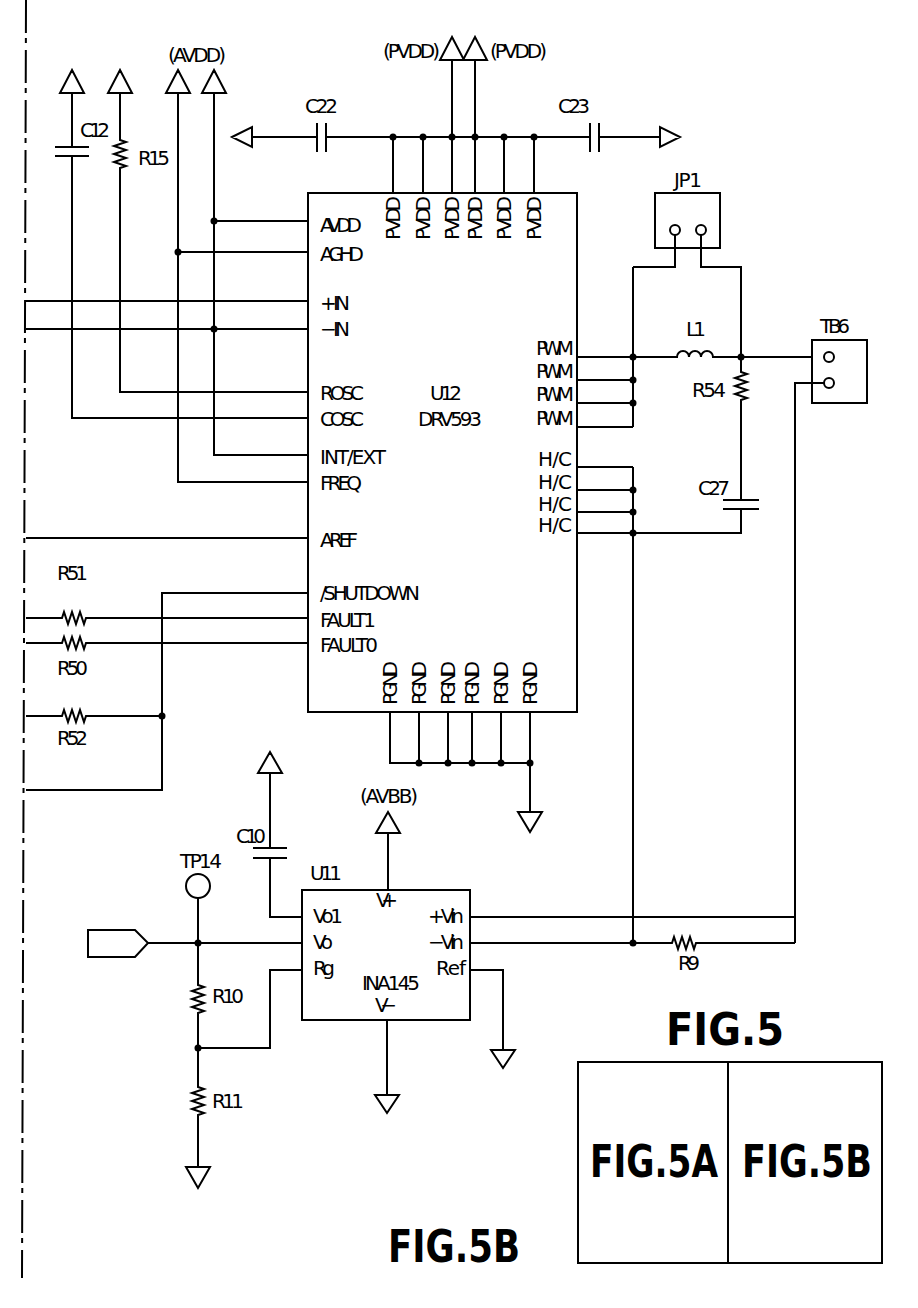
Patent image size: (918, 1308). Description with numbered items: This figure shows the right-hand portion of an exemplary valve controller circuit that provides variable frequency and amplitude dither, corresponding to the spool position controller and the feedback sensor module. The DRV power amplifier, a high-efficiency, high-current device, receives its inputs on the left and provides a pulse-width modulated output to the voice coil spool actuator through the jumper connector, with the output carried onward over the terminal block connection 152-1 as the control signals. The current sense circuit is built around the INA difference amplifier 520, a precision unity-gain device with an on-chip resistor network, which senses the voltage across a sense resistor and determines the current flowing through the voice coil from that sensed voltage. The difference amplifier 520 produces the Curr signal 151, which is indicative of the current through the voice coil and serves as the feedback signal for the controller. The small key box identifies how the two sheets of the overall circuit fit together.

The Curr signal 151 is at (102, 958).
The INA145 520 is at (342, 1020).
The TB6 connection 152-1 is at (795, 513).